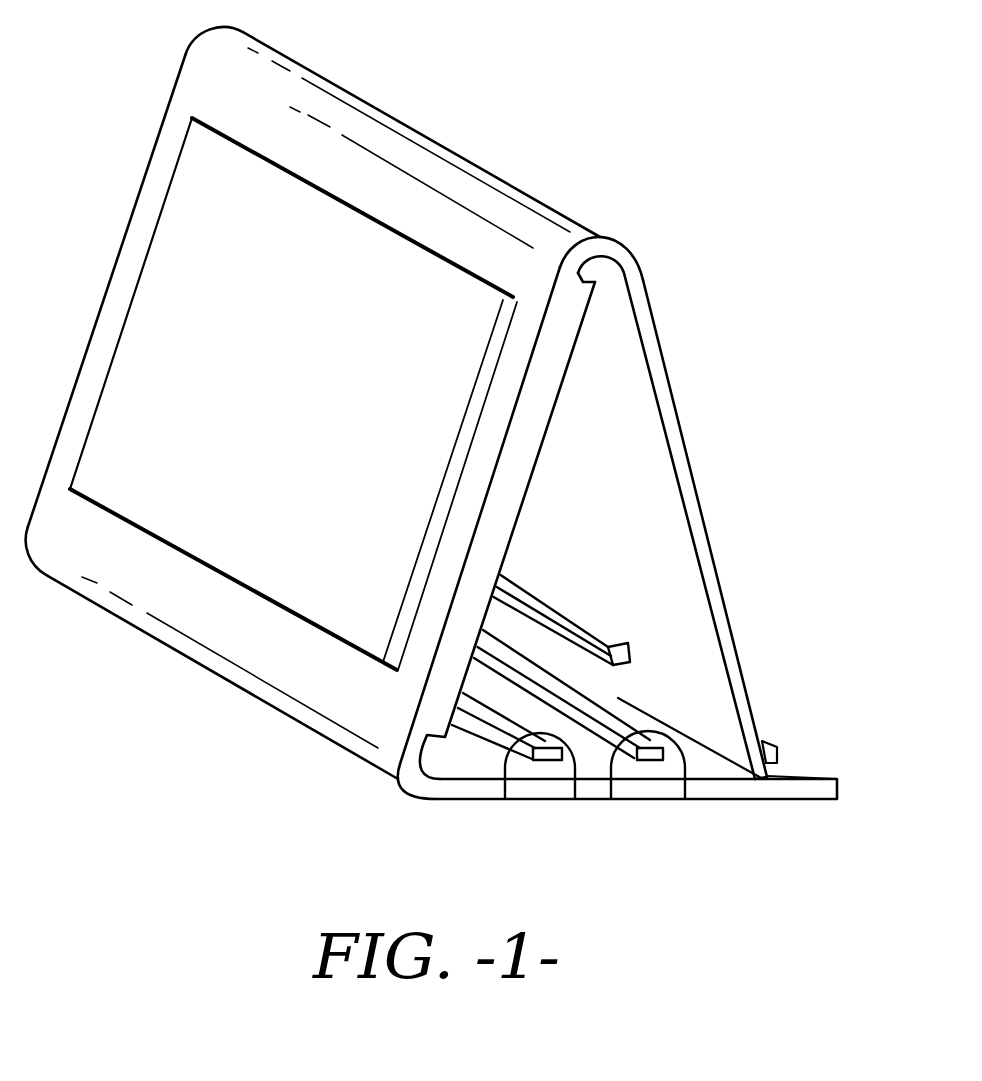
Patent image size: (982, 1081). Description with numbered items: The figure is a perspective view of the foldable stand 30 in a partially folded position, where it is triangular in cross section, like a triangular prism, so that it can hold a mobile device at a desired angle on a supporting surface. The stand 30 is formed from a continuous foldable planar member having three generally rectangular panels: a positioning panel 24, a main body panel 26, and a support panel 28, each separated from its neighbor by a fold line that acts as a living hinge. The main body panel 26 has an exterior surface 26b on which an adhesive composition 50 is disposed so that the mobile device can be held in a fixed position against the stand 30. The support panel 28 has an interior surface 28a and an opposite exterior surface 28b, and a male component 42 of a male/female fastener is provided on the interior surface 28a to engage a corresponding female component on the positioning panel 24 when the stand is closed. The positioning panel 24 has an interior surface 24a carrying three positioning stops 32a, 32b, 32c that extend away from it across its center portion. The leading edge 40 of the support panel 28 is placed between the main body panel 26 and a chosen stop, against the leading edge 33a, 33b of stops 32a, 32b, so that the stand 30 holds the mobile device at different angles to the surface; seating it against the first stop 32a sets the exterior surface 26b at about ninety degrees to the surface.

The foldable stand 30 is at (522, 98).
The main body panel 26 is at (442, 687).
The exterior surface of the main body panel 26b is at (148, 208).
The adhesive composition 50 is at (158, 338).
The support panel 28 is at (668, 551).
The interior surface of the support panel 28a is at (625, 458).
The exterior surface of the support panel 28b is at (678, 410).
The male component of the male/female fastener 42 is at (592, 632).
The positioning panel 24 is at (802, 790).
The interior surface of the positioning panel 24a is at (797, 772).
The leading edge of the support panel 40 is at (768, 781).
The first positioning stop 32a is at (575, 785).
The second positioning stop 32b is at (685, 785).
The third positioning stop 32c is at (777, 749).
The leading edge of the first stop 33a is at (533, 752).
The leading edge of the second stop 33b is at (637, 752).